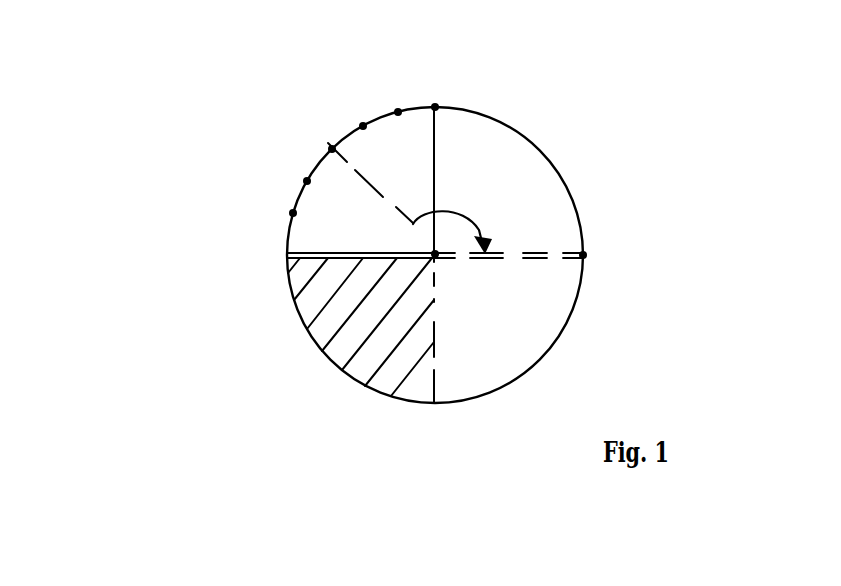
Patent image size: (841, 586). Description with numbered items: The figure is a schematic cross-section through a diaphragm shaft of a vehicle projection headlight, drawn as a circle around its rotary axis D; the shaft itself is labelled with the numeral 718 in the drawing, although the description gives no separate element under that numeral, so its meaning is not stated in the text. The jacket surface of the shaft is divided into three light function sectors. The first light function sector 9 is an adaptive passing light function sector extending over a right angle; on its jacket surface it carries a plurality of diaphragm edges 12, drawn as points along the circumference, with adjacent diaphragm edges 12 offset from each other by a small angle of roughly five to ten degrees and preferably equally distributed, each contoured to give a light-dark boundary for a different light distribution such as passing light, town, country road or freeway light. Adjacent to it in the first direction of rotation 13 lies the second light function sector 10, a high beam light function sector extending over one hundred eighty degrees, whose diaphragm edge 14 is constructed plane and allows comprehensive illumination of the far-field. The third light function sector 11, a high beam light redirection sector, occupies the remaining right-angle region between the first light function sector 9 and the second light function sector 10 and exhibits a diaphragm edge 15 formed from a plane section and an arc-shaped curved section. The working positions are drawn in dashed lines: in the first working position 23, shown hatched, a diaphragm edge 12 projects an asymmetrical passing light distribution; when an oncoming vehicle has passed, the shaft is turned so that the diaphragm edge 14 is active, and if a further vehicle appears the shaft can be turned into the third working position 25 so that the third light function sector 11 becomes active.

The second light function sector 10 is at (628, 158).
The axis of rotation 718 is at (571, 313).
The diaphragm edge 14 is at (587, 252).
The first working position 23 is at (378, 192).
The rotary axis D is at (433, 252).
The third working position 25 is at (420, 353).
The diaphragm edges 12 is at (330, 146).
The first direction of rotation 13 is at (157, 78).
The first light function sector 9 is at (246, 182).
The third light function sector 11 is at (296, 443).
The diaphragm edge 15 is at (585, 577).